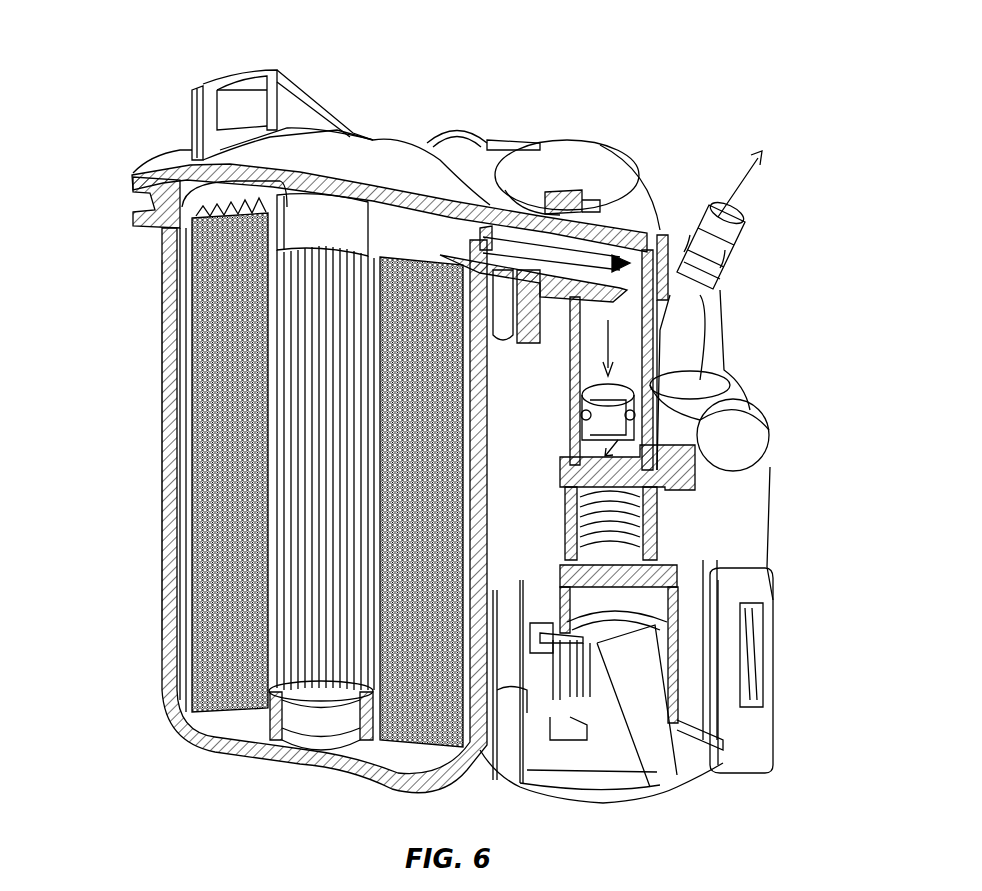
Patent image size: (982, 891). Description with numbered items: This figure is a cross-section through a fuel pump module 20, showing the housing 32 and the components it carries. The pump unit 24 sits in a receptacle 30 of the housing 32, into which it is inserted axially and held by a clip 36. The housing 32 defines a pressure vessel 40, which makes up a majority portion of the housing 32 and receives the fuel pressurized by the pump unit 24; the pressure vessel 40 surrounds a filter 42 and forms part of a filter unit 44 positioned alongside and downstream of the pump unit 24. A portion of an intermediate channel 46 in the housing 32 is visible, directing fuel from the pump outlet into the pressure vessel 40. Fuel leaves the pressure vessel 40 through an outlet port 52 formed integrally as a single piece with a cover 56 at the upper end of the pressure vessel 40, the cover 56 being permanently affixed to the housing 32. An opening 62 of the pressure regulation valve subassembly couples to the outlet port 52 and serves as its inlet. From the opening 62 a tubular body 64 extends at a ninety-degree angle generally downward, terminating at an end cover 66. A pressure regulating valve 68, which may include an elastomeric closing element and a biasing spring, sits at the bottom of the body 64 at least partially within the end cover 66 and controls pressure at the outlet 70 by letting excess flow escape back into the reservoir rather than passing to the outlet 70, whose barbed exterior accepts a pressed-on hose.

The fuel pump module 20 is at (677, 62).
The pump unit 24 is at (710, 413).
The receptacle 30 is at (757, 462).
The housing 32 is at (165, 258).
The clip 36 is at (753, 653).
The pressure vessel 40 is at (180, 326).
The filter 42 is at (210, 505).
The filter unit 44 is at (166, 766).
The intermediate channel 46 is at (505, 340).
The outlet port 52 is at (622, 247).
The cover 56 is at (385, 150).
The opening 62 is at (607, 222).
The tubular body 64 is at (647, 393).
The end cover 66 is at (663, 520).
The pressure regulating valve 68 is at (627, 445).
The outlet 70 is at (730, 237).